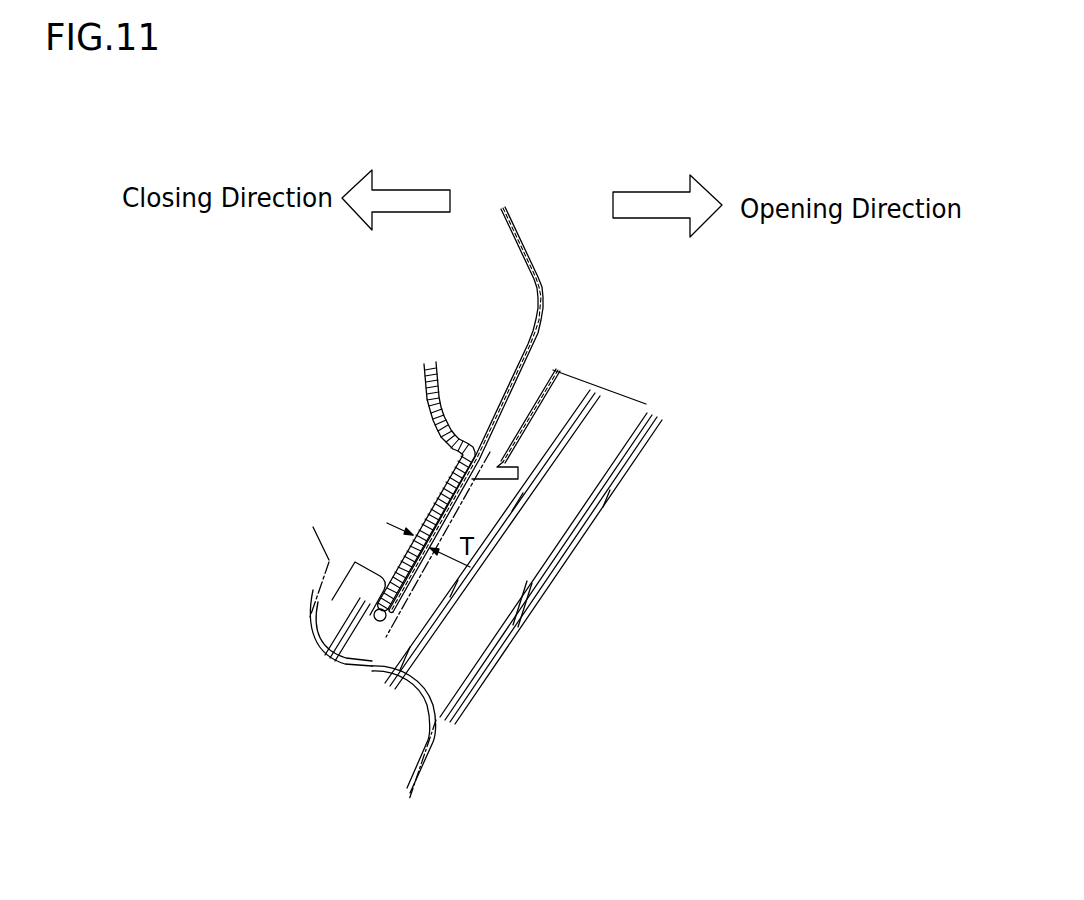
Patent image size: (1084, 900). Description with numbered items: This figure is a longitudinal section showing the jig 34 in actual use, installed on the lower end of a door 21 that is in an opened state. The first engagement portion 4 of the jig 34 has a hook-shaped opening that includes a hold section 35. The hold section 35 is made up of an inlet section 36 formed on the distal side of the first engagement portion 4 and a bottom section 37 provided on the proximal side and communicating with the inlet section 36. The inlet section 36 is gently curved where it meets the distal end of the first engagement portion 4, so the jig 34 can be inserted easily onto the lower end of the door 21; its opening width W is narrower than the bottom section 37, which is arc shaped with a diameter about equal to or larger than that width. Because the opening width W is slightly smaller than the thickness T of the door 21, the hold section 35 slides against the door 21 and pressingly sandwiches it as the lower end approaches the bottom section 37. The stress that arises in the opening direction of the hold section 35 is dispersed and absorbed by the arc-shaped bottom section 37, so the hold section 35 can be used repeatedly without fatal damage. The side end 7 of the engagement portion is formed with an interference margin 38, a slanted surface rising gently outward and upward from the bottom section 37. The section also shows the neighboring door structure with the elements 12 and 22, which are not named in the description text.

The first engagement portion 4 is at (347, 613).
The side end 7 is at (385, 491).
The glass run 12 is at (532, 422).
The door 21 is at (547, 280).
The door sash 22 is at (430, 700).
The jig 34 is at (577, 563).
The hold section 35 is at (372, 591).
The inlet section 36 is at (383, 590).
The bottom section 37 is at (372, 622).
The interference margin 38 is at (447, 485).